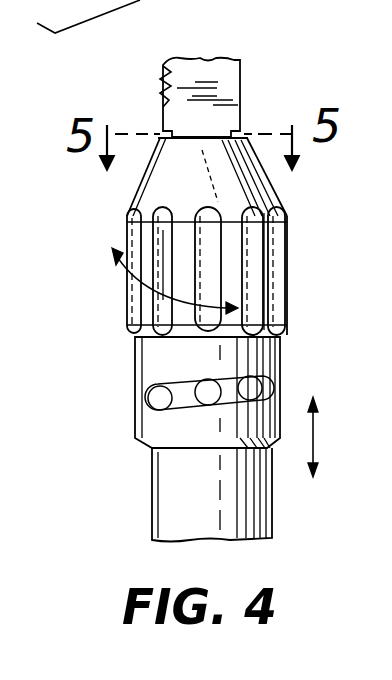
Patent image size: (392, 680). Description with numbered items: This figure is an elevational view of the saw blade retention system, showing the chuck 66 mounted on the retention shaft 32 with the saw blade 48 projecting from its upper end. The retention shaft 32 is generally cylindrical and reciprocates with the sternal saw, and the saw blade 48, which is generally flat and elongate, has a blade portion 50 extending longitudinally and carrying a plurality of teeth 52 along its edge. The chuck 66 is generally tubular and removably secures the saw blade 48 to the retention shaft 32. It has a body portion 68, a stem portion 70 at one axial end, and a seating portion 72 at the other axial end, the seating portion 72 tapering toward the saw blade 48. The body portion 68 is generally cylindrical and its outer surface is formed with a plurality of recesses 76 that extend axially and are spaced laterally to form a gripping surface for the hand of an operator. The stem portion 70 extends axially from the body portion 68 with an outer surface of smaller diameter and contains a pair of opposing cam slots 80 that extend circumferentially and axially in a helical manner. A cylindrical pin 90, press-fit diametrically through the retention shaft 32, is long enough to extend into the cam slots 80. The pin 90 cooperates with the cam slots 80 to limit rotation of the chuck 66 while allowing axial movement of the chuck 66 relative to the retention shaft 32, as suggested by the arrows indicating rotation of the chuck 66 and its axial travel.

The retention shaft 32 is at (268, 528).
The saw blade 48 is at (243, 73).
The blade portion 50 is at (213, 72).
The teeth 52 is at (164, 70).
The chuck 66 is at (292, 238).
The body portion 68 is at (268, 283).
The stem portion 70 is at (273, 358).
The seating portion 72 is at (255, 190).
The recesses 76 is at (160, 234).
The cam slots 80 is at (177, 412).
The pin 90 is at (185, 384).